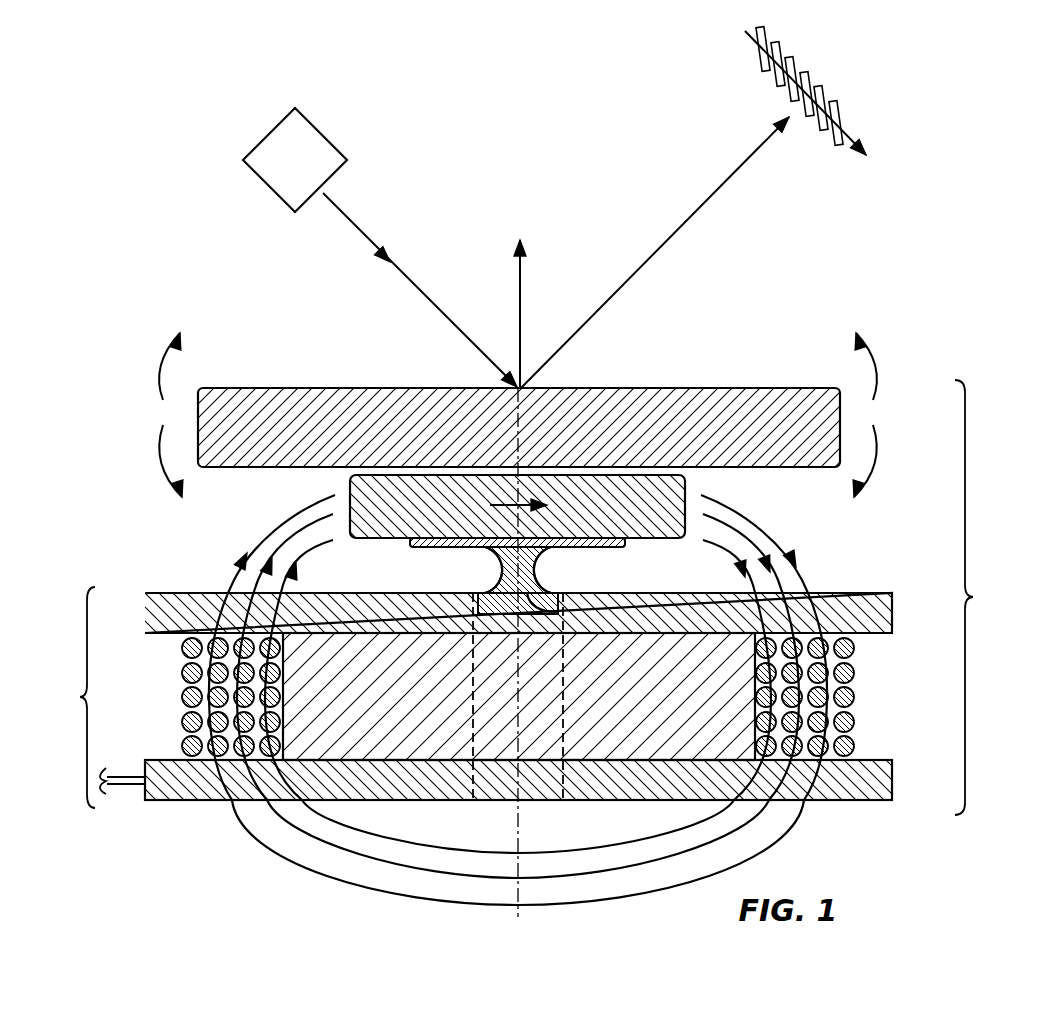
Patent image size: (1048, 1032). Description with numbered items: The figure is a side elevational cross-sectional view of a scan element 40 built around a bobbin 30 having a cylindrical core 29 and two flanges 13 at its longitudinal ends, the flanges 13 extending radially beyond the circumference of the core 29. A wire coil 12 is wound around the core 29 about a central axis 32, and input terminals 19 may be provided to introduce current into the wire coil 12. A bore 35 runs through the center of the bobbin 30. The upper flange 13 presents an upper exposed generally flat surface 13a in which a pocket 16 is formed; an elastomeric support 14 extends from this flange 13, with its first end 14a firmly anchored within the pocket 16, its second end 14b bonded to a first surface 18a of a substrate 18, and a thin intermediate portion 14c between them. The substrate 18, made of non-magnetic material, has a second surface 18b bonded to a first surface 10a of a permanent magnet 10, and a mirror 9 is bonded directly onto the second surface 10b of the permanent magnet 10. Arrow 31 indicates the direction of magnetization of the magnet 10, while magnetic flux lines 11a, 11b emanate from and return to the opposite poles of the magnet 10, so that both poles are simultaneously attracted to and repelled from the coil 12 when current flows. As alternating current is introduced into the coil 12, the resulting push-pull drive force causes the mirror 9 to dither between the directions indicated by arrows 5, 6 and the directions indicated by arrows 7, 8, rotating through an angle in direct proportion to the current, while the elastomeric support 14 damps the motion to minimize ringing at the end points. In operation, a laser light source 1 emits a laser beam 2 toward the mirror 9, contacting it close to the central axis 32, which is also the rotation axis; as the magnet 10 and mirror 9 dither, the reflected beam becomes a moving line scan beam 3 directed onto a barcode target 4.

The laser light source 1 is at (312, 145).
The laser beam 2 is at (350, 214).
The moving line scan beam 3 is at (702, 205).
The barcode target 4 is at (838, 110).
The arrow indicating dithering direction 5 is at (162, 352).
The arrow indicating dithering direction 6 is at (875, 470).
The arrow indicating dithering direction 7 is at (877, 375).
The arrow indicating dithering direction 8 is at (163, 472).
The mirror 9 is at (751, 387).
The permanent magnet 10 is at (685, 500).
The first surface of permanent magnet 10a is at (650, 540).
The second surface of permanent magnet 10b is at (622, 476).
The magnetic flux lines 11a is at (762, 528).
The magnetic flux lines 11b is at (280, 527).
The wire coil 12 is at (856, 692).
The flange 13 is at (880, 617).
The upper exposed generally flat surface of flange 13a is at (187, 593).
The elastomeric support 14 is at (533, 571).
The first end of elastomeric support 14a is at (560, 608).
The second end of elastomeric support 14b is at (538, 533).
The intermediate portion of elastomeric support 14c is at (488, 578).
The pocket 16 is at (492, 622).
The substrate 18 is at (413, 543).
The first surface of substrate 18a is at (468, 548).
The second surface of substrate 18b is at (433, 540).
The input terminals 19 is at (130, 790).
The cylindrical core 29 is at (410, 740).
The bobbin 30 is at (64, 697).
The arrow indicating direction of magnetization 31 is at (505, 500).
The central axis 32 is at (521, 292).
The bore 35 is at (565, 782).
The scan element 40 is at (985, 597).